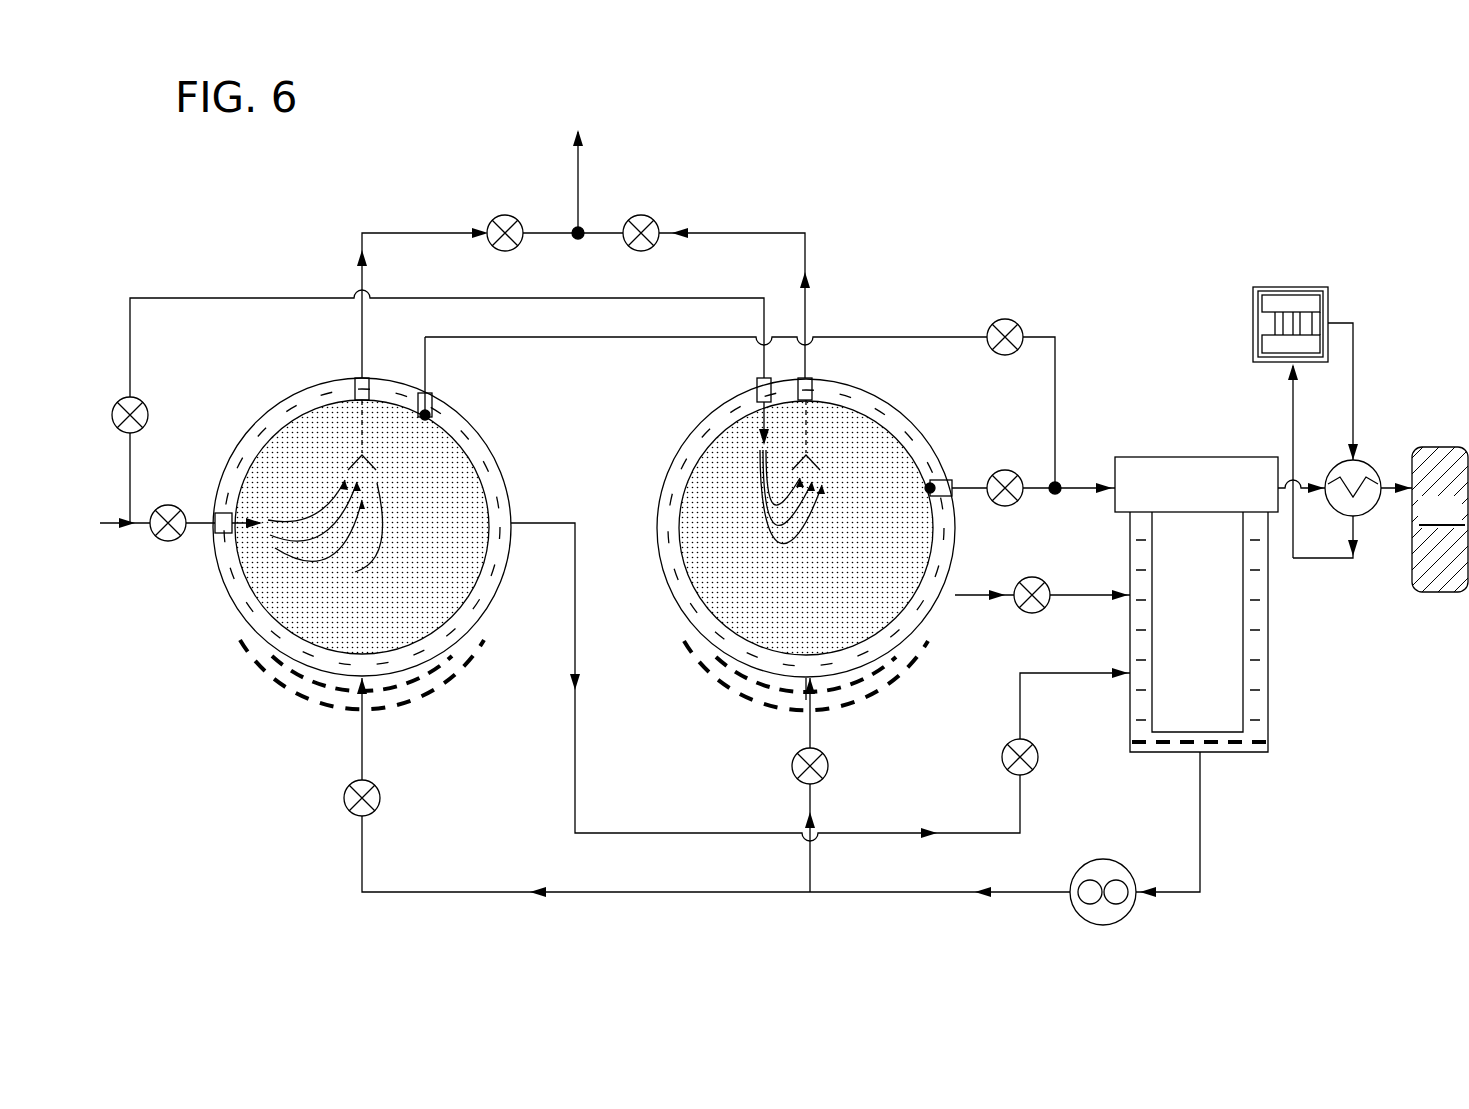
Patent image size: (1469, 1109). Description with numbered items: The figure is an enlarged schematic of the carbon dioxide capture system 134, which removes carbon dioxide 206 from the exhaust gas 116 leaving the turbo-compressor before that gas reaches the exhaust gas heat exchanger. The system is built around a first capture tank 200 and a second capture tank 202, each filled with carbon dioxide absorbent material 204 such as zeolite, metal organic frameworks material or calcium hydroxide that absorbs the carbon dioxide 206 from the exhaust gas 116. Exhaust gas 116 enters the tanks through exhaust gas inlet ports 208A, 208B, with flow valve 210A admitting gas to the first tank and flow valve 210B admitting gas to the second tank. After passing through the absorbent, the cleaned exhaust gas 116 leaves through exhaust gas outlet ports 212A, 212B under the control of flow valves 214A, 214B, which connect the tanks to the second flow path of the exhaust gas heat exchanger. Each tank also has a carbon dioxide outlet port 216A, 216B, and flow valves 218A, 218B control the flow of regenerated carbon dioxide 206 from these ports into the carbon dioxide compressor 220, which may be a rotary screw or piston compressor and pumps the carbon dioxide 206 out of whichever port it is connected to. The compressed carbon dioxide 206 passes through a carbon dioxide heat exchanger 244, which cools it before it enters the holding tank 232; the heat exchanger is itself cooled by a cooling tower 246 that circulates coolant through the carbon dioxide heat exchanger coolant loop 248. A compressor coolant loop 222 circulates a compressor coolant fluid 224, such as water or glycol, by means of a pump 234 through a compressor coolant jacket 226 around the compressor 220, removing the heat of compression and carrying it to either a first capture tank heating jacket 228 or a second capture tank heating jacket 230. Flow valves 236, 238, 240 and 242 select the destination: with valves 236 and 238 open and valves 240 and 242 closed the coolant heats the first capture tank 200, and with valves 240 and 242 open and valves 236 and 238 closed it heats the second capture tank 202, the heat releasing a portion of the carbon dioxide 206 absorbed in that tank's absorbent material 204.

The exhaust gas 116 is at (157, 298).
The carbon dioxide capture system 134 is at (1068, 196).
The first capture tank 200 is at (742, 532).
The second capture tank 202 is at (839, 546).
The carbon dioxide absorbent material 204 is at (400, 602).
The carbon dioxide 206 is at (1055, 385).
The exhaust gas inlet port 208A is at (222, 512).
The exhaust gas inlet port 208B is at (757, 396).
The flow valve 210A is at (168, 542).
The flow valve 210B is at (148, 418).
The exhaust gas outlet port 212A is at (350, 380).
The exhaust gas outlet port 212B is at (815, 385).
The flow valve 214A is at (493, 220).
The flow valve 214B is at (648, 218).
The carbon dioxide outlet port 216A is at (433, 398).
The carbon dioxide outlet port 216B is at (938, 482).
The flow valve 218A is at (1003, 319).
The flow valve 218B is at (1005, 506).
The carbon dioxide compressor 220 is at (1165, 457).
The compressor coolant loop 222 is at (812, 725).
The compressor coolant fluid 224 is at (415, 655).
The compressor coolant jacket 226 is at (1270, 716).
The first capture tank heating jacket 228 is at (258, 638).
The second capture tank heating jacket 230 is at (787, 680).
The holding tank 232 is at (1455, 447).
The pump 234 is at (1100, 860).
The flow valve 236 is at (380, 798).
The flow valve 238 is at (1040, 760).
The flow valve 240 is at (792, 766).
The flow valve 242 is at (1026, 580).
The carbon dioxide heat exchanger 244 is at (1335, 468).
The cooling tower 246 is at (1286, 288).
The carbon dioxide heat exchanger coolant loop 248 is at (1292, 420).